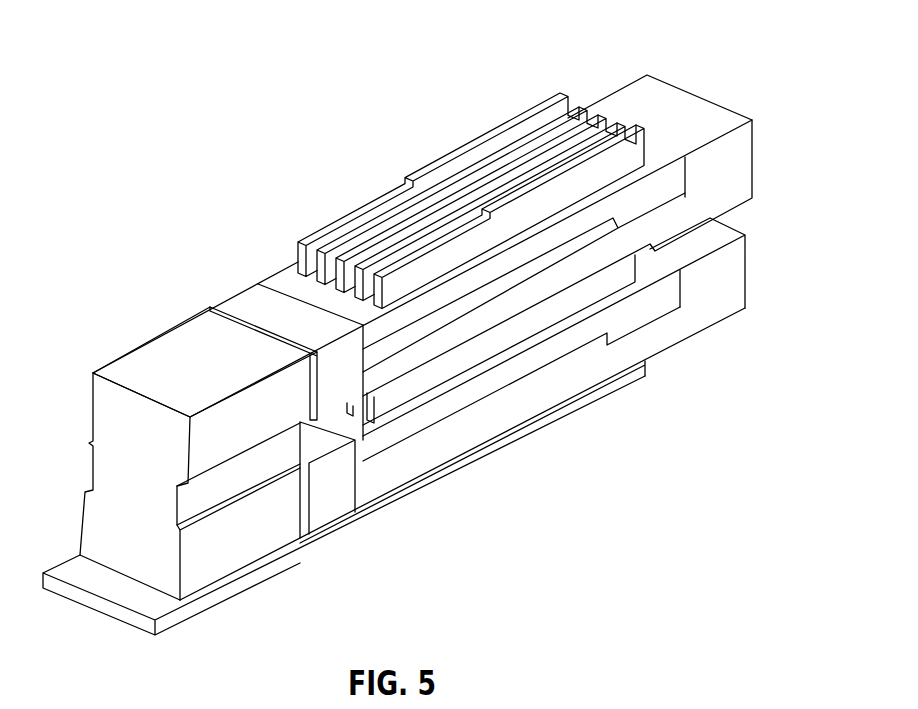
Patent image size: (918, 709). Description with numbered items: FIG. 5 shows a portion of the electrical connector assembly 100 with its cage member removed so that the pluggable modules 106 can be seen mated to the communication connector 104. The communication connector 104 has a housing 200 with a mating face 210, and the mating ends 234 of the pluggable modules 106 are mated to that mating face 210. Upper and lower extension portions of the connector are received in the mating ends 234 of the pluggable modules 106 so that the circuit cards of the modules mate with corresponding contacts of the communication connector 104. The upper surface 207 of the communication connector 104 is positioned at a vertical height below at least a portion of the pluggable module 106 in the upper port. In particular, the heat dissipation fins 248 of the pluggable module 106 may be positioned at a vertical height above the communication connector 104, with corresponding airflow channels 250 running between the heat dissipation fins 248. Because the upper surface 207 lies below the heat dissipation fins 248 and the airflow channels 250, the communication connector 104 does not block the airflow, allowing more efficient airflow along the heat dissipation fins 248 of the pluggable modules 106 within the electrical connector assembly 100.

The electrical connector assembly 100 is at (219, 146).
The communication connector 104 is at (151, 330).
The pluggable module 106 is at (730, 122).
The housing 200 is at (100, 410).
The upper surface 207 is at (187, 340).
The mating face 210 is at (250, 328).
The mating end 234 is at (298, 516).
The heat dissipation fins 248 is at (360, 210).
The airflow channel 250 is at (572, 104).